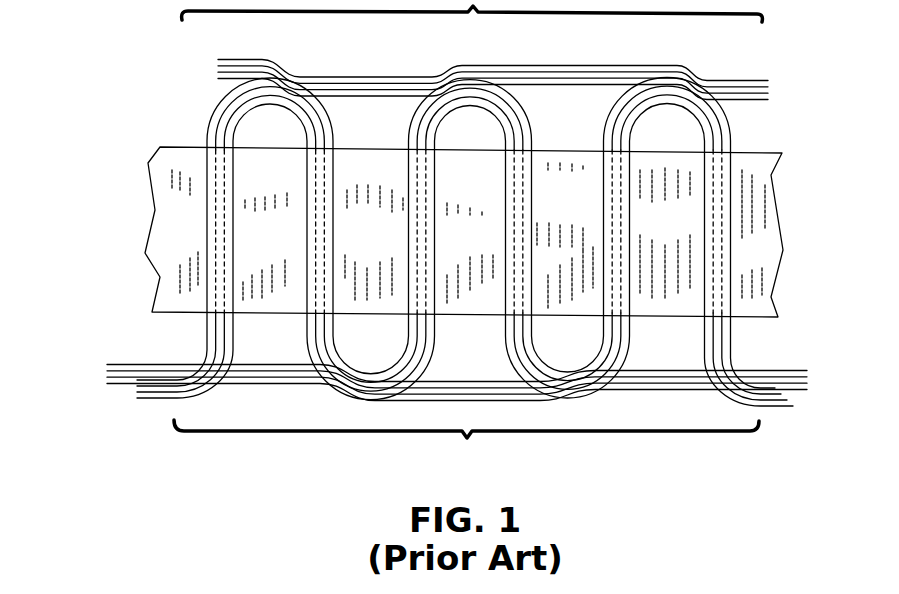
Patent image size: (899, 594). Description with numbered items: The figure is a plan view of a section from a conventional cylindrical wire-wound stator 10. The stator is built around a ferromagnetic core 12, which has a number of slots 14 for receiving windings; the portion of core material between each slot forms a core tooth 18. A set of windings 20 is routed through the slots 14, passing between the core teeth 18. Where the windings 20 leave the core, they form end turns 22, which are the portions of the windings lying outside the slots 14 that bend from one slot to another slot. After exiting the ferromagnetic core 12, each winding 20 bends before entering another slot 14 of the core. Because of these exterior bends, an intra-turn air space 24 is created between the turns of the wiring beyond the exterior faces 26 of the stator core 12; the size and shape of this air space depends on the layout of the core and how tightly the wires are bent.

The wire-wound stator 10 is at (123, 45).
The ferromagnetic core 12 is at (131, 215).
The slots 14 is at (493, 220).
The core tooth 18 is at (665, 303).
The windings 20 is at (350, 76).
The end turns 22 is at (457, 421).
The intra-turn air space 24 is at (248, 130).
The exterior faces 26 is at (556, 152).